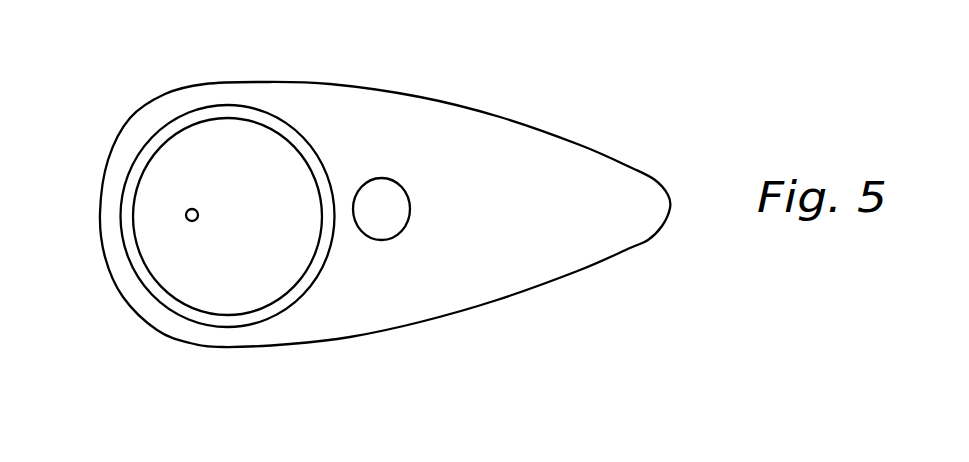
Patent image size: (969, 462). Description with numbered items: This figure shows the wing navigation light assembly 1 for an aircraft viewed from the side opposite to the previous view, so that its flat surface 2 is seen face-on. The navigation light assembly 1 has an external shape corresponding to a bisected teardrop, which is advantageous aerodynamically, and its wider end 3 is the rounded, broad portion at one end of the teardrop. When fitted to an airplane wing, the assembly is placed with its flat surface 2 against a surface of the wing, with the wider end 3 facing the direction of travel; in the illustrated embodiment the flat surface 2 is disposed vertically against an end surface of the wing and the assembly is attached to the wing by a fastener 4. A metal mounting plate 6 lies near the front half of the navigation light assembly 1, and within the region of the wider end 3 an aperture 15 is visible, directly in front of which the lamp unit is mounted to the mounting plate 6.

The navigation light assembly 1 is at (590, 92).
The flat surface 2 is at (533, 224).
The wider end 3 is at (140, 312).
The fastener 4 is at (389, 223).
The mounting plate 6 is at (361, 302).
The aperture 15 is at (198, 219).